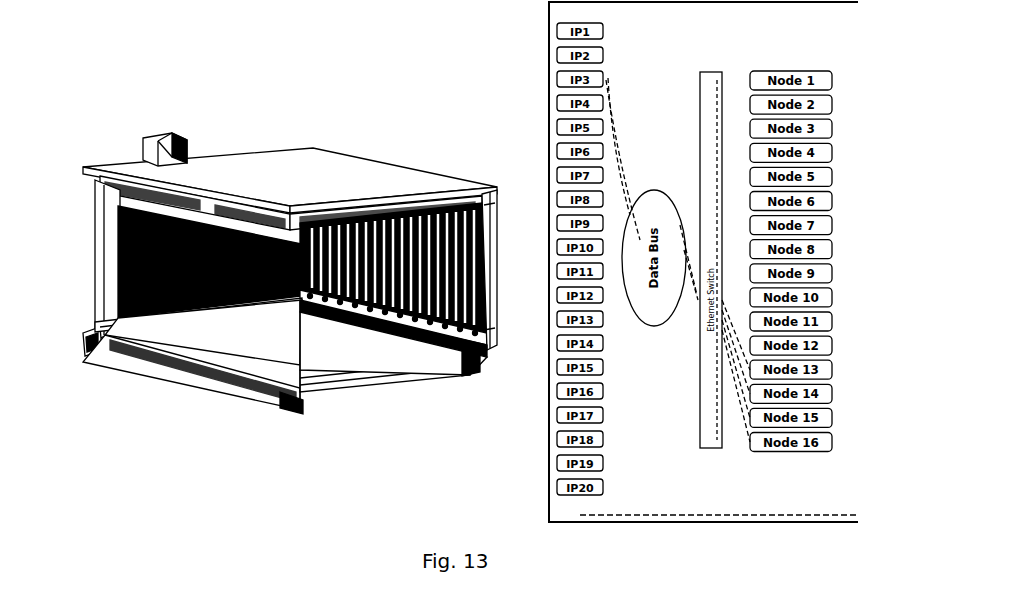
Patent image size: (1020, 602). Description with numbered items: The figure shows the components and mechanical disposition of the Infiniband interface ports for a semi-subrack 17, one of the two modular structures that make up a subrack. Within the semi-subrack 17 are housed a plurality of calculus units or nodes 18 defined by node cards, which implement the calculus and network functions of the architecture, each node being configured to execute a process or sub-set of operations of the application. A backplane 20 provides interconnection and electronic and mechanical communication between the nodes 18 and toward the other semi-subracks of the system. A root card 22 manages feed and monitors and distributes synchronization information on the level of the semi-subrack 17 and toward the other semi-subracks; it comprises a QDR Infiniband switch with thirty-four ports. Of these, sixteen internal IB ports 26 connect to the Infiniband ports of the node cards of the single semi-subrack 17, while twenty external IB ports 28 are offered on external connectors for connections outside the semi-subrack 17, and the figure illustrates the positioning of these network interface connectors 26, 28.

The semi-subrack 17 is at (233, 92).
The nodes 18 is at (110, 247).
The backplane 20 is at (483, 326).
The root card 22 is at (237, 172).
The internal IB ports 26 is at (493, 188).
The external IB ports 28 is at (433, 190).